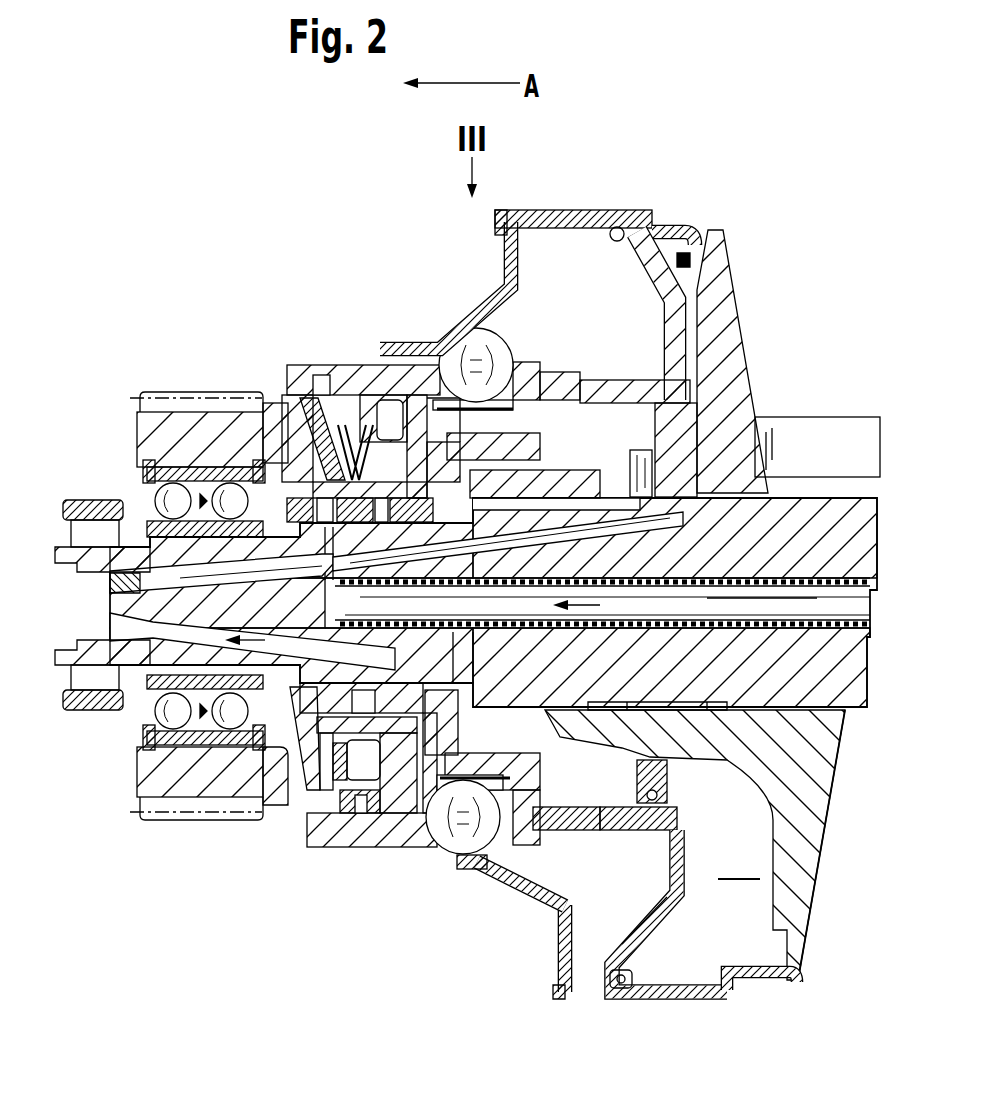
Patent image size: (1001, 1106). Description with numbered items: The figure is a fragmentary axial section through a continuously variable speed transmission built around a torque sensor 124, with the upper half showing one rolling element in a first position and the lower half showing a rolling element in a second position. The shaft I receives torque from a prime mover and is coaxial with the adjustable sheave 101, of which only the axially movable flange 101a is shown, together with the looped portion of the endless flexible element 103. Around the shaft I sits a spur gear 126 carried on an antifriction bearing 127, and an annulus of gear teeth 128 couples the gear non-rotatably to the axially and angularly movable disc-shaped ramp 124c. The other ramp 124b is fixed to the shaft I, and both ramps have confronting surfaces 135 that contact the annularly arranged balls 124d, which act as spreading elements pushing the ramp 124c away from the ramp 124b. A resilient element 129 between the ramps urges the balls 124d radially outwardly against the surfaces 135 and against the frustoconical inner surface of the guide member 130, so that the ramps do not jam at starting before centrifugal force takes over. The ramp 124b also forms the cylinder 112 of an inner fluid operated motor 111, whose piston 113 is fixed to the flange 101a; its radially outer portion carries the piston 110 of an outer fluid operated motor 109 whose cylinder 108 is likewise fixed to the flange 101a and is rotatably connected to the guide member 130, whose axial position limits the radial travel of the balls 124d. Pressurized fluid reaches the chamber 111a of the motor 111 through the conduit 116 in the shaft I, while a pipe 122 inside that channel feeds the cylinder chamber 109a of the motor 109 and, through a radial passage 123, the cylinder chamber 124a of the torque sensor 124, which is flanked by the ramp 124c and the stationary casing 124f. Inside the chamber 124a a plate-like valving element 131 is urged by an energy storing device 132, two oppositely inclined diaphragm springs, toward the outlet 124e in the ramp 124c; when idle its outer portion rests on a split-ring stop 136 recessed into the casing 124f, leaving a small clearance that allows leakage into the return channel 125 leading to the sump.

The adjustable sheave 101 is at (773, 323).
The axially movable flange 101a is at (720, 300).
The endless flexible element 103 is at (866, 464).
The cylinder 108 is at (767, 977).
The fluid operated motor 109 is at (656, 903).
The cylinder chamber 109a is at (678, 262).
The piston 110 is at (650, 952).
The fluid operated motor 111 is at (618, 845).
The chamber 111a is at (560, 875).
The cylinder 112 is at (520, 880).
The piston 113 is at (660, 785).
The conduit 116 is at (832, 710).
The pipe or hose 122 is at (747, 600).
The radial passage 123 is at (263, 412).
The torque sensor 124 is at (375, 330).
The cylinder chamber 124a is at (295, 410).
The ramp 124b is at (478, 872).
The ramp 124c is at (400, 850).
The spherical rolling elements 124d is at (448, 835).
The outlet 124e is at (350, 368).
The casing 124f is at (310, 825).
The channel or conduit 125 is at (147, 748).
The spur gear 126 is at (167, 783).
The antifriction bearing 127 is at (207, 745).
The gear teeth 128 is at (275, 810).
The resilient element 129 is at (440, 343).
The frustoconical guide member 130 is at (570, 805).
The plate-like valving element 131 is at (356, 430).
The energy storing device 132 is at (322, 440).
The confronting surfaces 135 is at (507, 347).
The abutment or stop 136 is at (352, 815).
The shaft I is at (93, 665).